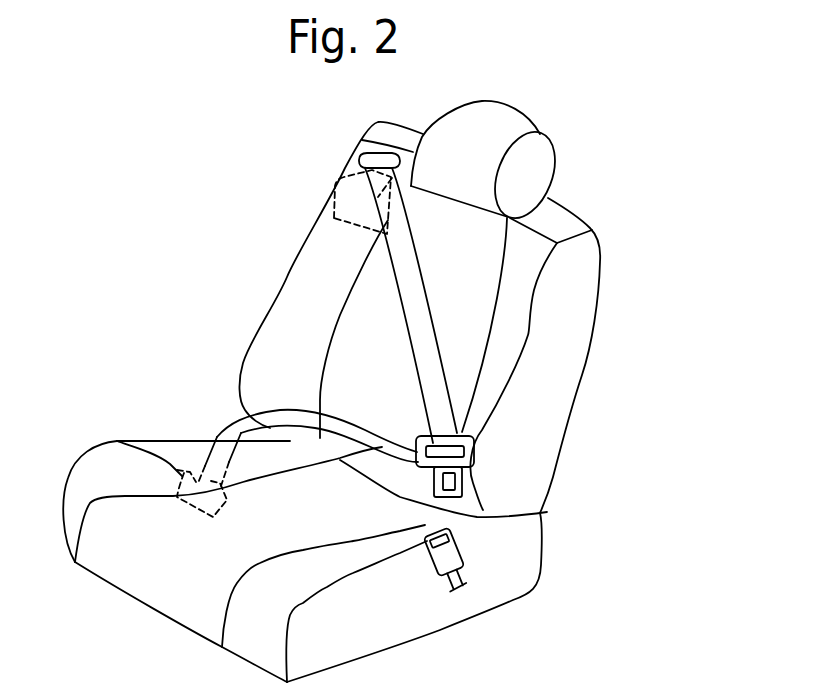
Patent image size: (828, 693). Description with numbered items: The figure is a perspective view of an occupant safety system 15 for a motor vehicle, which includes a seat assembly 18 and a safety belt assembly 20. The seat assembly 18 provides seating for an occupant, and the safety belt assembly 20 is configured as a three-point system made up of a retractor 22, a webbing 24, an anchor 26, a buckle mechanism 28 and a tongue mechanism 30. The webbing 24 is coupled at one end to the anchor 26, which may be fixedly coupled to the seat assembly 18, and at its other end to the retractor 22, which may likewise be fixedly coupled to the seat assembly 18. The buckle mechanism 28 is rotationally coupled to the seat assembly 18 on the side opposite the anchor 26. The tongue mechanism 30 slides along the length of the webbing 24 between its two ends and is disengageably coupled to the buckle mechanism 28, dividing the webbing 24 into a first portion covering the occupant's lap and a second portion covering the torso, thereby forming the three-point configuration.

The occupant safety system 15 is at (135, 218).
The seat assembly 18 is at (580, 183).
The safety belt assembly 20 is at (362, 319).
The retractor 22 is at (352, 207).
The webbing 24 is at (423, 307).
The anchor 26 is at (114, 441).
The buckle mechanism 28 is at (460, 555).
The tongue mechanism 30 is at (470, 447).